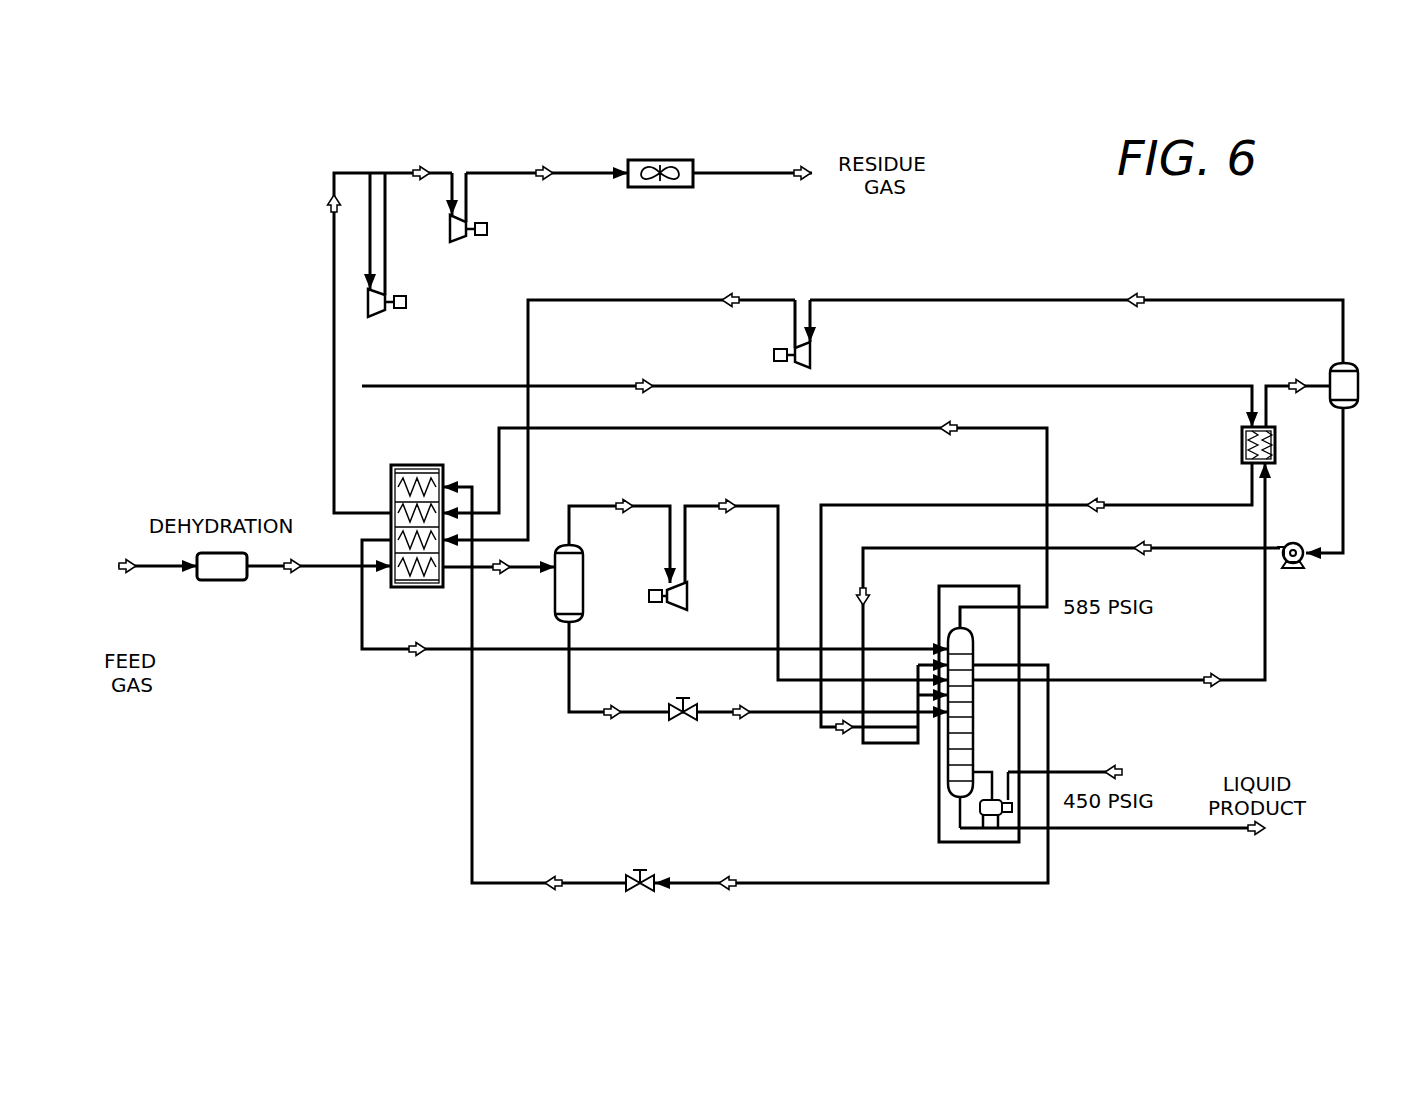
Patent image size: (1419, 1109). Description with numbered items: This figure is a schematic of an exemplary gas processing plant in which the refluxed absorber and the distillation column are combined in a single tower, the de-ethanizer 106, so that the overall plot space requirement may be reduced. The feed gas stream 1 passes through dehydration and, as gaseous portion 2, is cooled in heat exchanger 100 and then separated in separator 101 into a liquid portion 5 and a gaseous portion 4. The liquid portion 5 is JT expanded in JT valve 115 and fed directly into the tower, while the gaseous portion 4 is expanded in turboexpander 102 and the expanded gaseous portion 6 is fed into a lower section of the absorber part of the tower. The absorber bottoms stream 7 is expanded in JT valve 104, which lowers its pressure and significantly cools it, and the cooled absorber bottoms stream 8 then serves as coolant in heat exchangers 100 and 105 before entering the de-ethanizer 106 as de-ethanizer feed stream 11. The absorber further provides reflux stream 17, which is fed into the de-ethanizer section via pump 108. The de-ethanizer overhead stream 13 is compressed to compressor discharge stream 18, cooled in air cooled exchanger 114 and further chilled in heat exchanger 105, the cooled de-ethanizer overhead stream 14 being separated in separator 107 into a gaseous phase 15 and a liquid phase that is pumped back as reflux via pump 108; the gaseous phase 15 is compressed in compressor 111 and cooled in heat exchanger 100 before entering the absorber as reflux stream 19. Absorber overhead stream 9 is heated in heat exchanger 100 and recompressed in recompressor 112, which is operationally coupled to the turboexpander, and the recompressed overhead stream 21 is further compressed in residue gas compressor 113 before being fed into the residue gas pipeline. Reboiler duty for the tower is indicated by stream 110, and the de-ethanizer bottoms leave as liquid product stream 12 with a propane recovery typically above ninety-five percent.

The feed gas stream 1 is at (128, 575).
The gaseous portion 2 is at (293, 575).
The gaseous portion 4 is at (625, 498).
The liquid portion 5 is at (613, 720).
The expanded gaseous portion 6 is at (728, 498).
The absorber bottoms stream 7 is at (727, 874).
The cooled absorber bottoms stream 8 is at (553, 874).
The absorber overhead stream 9 is at (950, 432).
The de-ethanizer feed stream 11 is at (1097, 495).
The liquid product stream 12 is at (1255, 838).
The overhead stream 13 is at (1212, 690).
The cooled de-ethanizer overhead stream 14 is at (1297, 378).
The gaseous phase 15 is at (1135, 292).
The reflux stream 17 is at (1142, 540).
The compressor discharge stream 18 is at (731, 292).
The reflux stream 19 is at (417, 656).
The recompressed overhead stream 21 is at (421, 168).
The heat exchanger 100 is at (397, 590).
The separator 101 is at (585, 582).
The turboexpander 102 is at (690, 590).
The JT valve 104 is at (640, 862).
The heat exchanger 105 is at (1242, 445).
The de-ethanizer 106 is at (939, 816).
The separator 107 is at (1360, 386).
The pump 108 is at (1297, 570).
The reboiler stream 110 is at (1115, 765).
The compressor 111 is at (812, 352).
The recompressor 112 is at (376, 318).
The residue gas compressor 113 is at (458, 243).
The air cooled exchanger 114 is at (660, 158).
The JT valve 115 is at (683, 722).